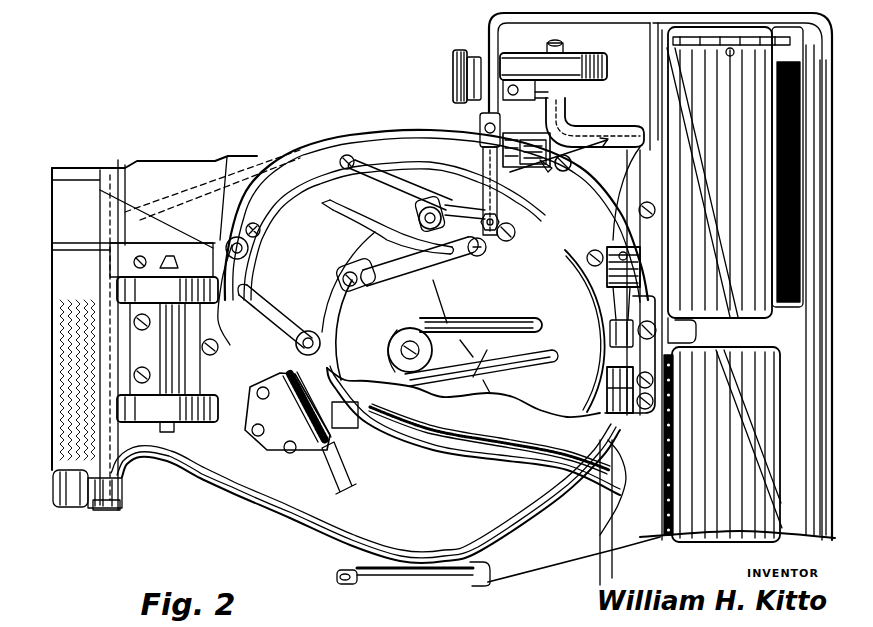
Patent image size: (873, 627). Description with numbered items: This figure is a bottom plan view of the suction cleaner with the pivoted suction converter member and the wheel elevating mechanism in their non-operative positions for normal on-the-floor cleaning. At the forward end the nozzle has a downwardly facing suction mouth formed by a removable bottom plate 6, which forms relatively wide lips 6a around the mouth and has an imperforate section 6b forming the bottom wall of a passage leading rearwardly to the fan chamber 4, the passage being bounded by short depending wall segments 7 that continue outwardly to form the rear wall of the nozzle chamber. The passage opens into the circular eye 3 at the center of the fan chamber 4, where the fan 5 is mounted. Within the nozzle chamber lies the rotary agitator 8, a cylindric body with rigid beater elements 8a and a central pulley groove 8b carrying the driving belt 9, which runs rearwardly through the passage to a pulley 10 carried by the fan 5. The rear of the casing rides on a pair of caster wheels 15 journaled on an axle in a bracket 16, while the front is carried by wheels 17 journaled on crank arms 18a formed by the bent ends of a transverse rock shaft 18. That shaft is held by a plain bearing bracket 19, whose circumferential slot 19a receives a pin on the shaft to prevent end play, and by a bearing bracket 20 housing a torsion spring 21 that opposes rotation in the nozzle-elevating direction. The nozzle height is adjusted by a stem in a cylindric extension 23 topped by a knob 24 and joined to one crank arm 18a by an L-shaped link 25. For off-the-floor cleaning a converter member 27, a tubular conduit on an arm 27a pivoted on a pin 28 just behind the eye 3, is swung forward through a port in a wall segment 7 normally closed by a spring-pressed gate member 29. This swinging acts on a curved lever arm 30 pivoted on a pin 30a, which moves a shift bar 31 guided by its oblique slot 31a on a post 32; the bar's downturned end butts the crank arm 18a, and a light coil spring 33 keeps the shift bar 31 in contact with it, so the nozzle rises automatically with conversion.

The eye 3 is at (464, 300).
The fan chamber 4 is at (463, 520).
The fan 5 is at (343, 281).
The bottom plate 6 is at (599, 494).
The lips 6a is at (703, 469).
The imperforate section 6b is at (423, 425).
The wall segments 7 is at (540, 240).
The rotary agitator 8 is at (722, 531).
The beater elements 8a is at (735, 415).
The pulley groove 8b is at (693, 317).
The driving belt 9 is at (525, 325).
The pulley 10 is at (400, 343).
The rear wheels 15 is at (205, 303).
The bracket 16 is at (188, 370).
The front wheels 17 is at (585, 82).
The rock shaft 18 is at (630, 181).
The crank arms 18a is at (605, 140).
The bearing bracket 19 is at (605, 384).
The circumferential slot 19a is at (616, 413).
The bearing bracket 20 is at (608, 322).
The torsion spring 21 is at (645, 272).
The cylindric extension 23 is at (475, 82).
The knob 24 is at (457, 67).
The L-shaped link 25 is at (545, 100).
The converter member 27 is at (337, 226).
The arm 27a is at (273, 287).
The pin 28 is at (306, 330).
The gate member 29 is at (472, 280).
The lever arm 30 is at (452, 197).
The pin 30a is at (520, 226).
The shift bar 31 is at (542, 164).
The slot 31a is at (545, 162).
The post 32 is at (572, 165).
The coil spring 33 is at (512, 221).